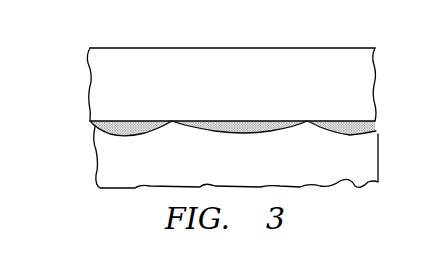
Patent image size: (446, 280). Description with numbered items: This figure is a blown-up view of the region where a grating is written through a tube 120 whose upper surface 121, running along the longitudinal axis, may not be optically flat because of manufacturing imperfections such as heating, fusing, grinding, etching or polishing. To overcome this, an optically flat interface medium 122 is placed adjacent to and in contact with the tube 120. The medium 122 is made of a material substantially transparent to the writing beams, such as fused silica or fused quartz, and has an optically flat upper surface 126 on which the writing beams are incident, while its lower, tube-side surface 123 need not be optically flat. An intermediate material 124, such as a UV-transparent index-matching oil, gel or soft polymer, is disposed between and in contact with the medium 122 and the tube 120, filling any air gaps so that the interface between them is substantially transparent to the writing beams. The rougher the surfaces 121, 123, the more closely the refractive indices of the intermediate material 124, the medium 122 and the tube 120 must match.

The tube 120 is at (248, 172).
The upper surface of the tube 121 is at (149, 130).
The interface medium 122 is at (248, 103).
The lower surface of the medium 123 is at (130, 121).
The intermediate material 124 is at (366, 128).
The upper surface of the medium 126 is at (366, 47).